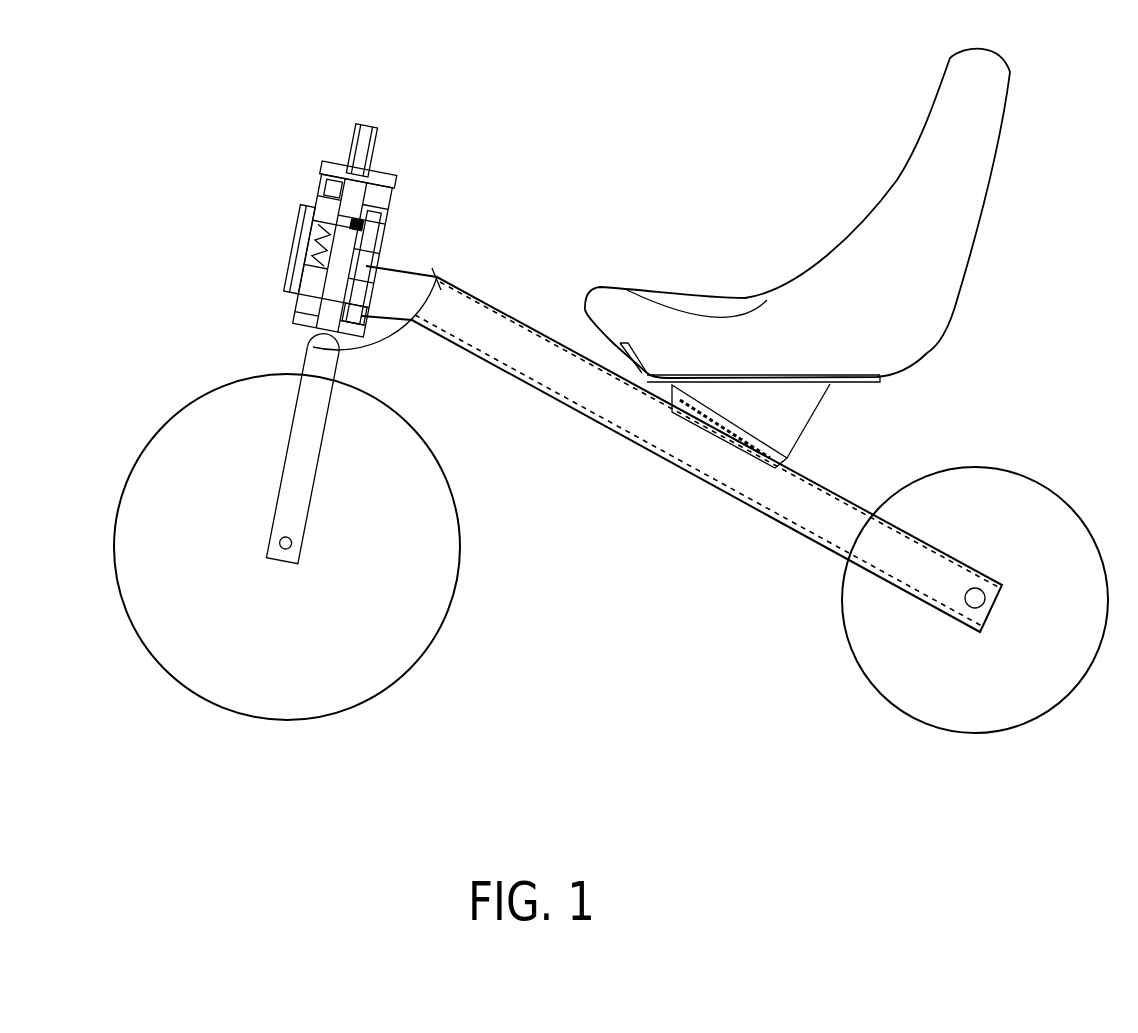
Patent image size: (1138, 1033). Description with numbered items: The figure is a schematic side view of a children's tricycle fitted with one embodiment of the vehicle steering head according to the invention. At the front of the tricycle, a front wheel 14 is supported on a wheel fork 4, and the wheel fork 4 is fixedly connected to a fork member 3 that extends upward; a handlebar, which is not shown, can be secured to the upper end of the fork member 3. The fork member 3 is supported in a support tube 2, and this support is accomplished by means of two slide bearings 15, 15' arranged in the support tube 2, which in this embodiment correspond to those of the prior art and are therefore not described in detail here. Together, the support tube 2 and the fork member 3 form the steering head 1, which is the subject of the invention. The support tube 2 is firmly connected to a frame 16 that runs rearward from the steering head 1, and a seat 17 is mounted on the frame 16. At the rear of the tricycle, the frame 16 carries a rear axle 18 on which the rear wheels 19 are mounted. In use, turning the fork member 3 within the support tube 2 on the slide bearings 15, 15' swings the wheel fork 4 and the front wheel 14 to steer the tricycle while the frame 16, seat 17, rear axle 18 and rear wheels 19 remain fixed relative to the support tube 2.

The steering head 1 is at (277, 260).
The support tube 2 is at (387, 215).
The fork member 3 is at (377, 145).
The wheel fork 4 is at (303, 455).
The front wheel 14 is at (137, 597).
The slide bearing 15 is at (299, 199).
The slide bearing 15' is at (375, 328).
The frame 16 is at (812, 493).
The seat 17 is at (950, 259).
The rear axle 18 is at (985, 597).
The rear wheel 19 is at (1053, 503).